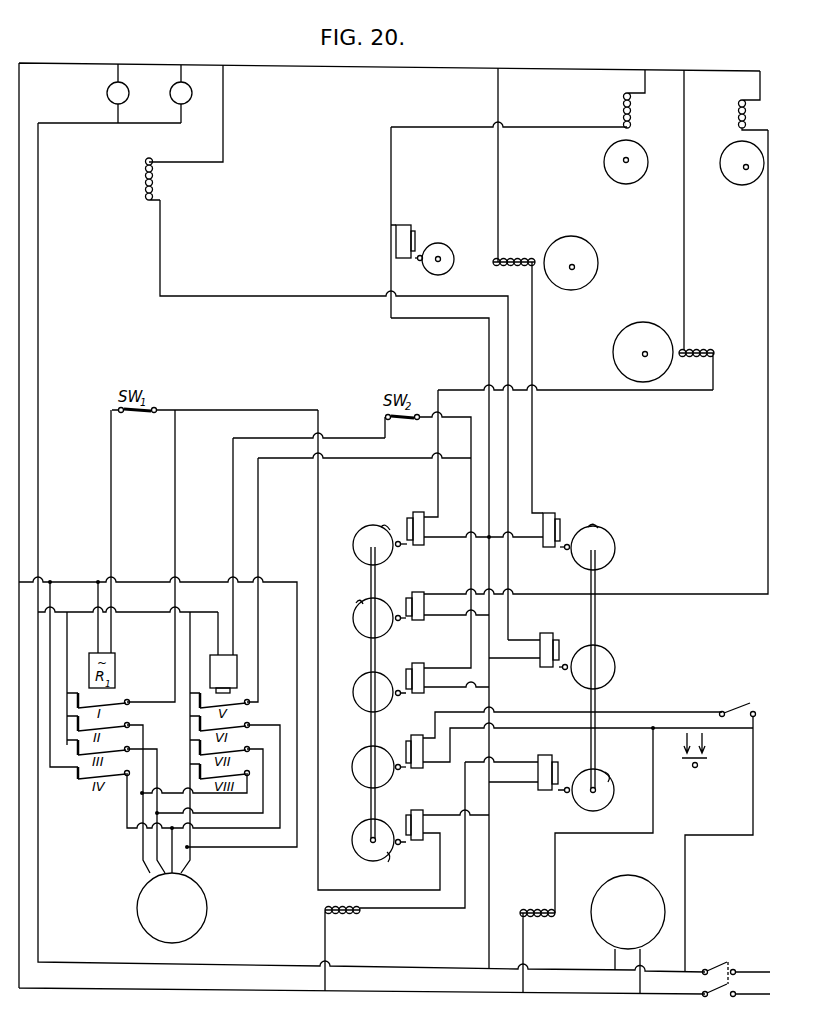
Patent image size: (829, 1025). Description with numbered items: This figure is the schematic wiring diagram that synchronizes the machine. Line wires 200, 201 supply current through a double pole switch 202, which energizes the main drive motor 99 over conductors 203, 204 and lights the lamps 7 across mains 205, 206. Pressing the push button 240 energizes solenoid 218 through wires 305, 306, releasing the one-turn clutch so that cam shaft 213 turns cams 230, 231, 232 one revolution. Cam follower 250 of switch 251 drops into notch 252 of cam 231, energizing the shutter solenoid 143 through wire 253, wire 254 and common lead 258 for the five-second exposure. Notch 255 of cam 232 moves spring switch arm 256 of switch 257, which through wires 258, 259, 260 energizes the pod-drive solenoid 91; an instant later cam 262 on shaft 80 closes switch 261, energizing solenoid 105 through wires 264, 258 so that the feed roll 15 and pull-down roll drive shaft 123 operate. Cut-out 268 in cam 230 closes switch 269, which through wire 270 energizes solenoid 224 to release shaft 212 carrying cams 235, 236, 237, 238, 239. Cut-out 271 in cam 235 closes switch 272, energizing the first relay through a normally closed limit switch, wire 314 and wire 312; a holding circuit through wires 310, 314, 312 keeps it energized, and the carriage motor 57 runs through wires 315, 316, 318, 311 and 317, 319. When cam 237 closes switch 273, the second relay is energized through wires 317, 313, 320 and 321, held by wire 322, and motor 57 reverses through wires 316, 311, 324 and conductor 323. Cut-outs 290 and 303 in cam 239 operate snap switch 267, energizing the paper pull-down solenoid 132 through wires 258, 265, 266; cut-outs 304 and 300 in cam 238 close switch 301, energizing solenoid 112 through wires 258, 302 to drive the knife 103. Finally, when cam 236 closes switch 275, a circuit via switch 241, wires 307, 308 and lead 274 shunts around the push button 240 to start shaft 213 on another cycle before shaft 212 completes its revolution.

The lamps 7 is at (170, 93).
The feed roll 15 is at (643, 151).
The motor 57 is at (137, 911).
The shaft 80 is at (444, 257).
The pod-drive control solenoid 91 is at (514, 258).
The main drive motor 99 is at (640, 890).
The knife 103 is at (744, 169).
The solenoid 105 is at (622, 112).
The solenoid 112 is at (737, 118).
The pull-down roll drive shaft 123 is at (641, 353).
The paper pull-down solenoid 132 is at (706, 350).
The shutter solenoid 143 is at (156, 184).
The line wire 200 is at (758, 969).
The line wire 201 is at (740, 995).
The double pole switch 202 is at (722, 963).
The conductor 203 is at (615, 958).
The conductor 204 is at (641, 960).
The conductor 205 is at (40, 388).
The conductor 206 is at (319, 72).
The shaft 212 is at (370, 672).
The cam shaft 213 is at (598, 640).
The solenoid 218 is at (541, 905).
The solenoid 224 is at (331, 917).
The cam disk 230 is at (599, 806).
The cam disk 231 is at (606, 682).
The cam disk 232 is at (611, 560).
The cam disk 235 is at (360, 855).
The cam disk 236 is at (362, 782).
The cam disk 237 is at (362, 712).
The cam disk 238 is at (358, 640).
The cam disk 239 is at (360, 578).
The push button 240 is at (699, 764).
The switch 241 is at (742, 708).
The cam follower 250 is at (566, 672).
The switch 251 is at (545, 633).
The notch 252 is at (577, 647).
The wire 253 is at (330, 298).
The wire 254 is at (226, 134).
The notch 255 is at (594, 528).
The spring switch arm 256 is at (558, 522).
The switch 257 is at (548, 513).
The common lead 258 is at (478, 322).
The wire 259 is at (534, 312).
The wire 260 is at (499, 177).
The switch 261 is at (405, 225).
The cam 262 is at (428, 246).
The wire 264 is at (466, 128).
The wire 265 is at (686, 272).
The wire 266 is at (641, 398).
The snap switch 267 is at (417, 512).
The cut-out 268 is at (606, 780).
The switch 269 is at (548, 791).
The wire 270 is at (450, 910).
The cut-out 271 is at (392, 862).
The switch 272 is at (416, 842).
The switch 273 is at (416, 680).
The conductor 274 is at (428, 700).
The switch 275 is at (415, 768).
The cut-out 290 is at (364, 536).
The cut-out 300 is at (398, 612).
The switch 301 is at (418, 600).
The wire 302 is at (731, 600).
The cut-out 303 is at (388, 542).
The cut-out 304 is at (352, 612).
The wire 305 is at (686, 880).
The wire 306 is at (556, 860).
The wire 307 is at (560, 735).
The wire 308 is at (697, 716).
The wire 310 is at (177, 520).
The wire 311 is at (152, 612).
The wire 312 is at (97, 597).
The wire 313 is at (218, 597).
The wire 314 is at (110, 500).
The wire 315 is at (126, 828).
The wire 316 is at (178, 862).
The wire 317 is at (297, 593).
The wire 318 is at (144, 727).
The wire 319 is at (157, 845).
The wire 320 is at (233, 463).
The wire 321 is at (478, 423).
The wire 322 is at (380, 464).
The conductor 323 is at (248, 823).
The wire 324 is at (179, 803).